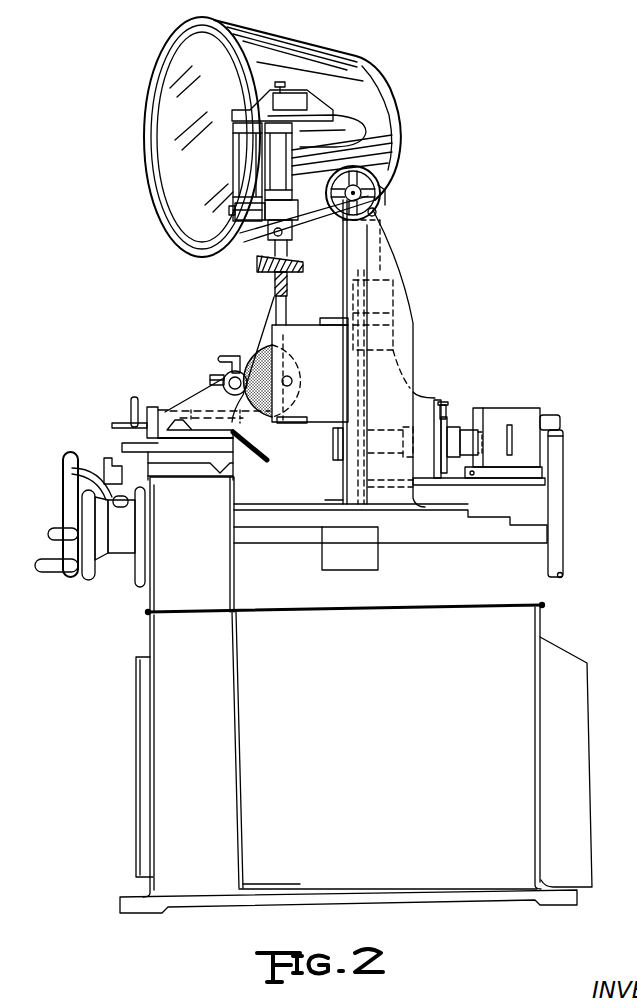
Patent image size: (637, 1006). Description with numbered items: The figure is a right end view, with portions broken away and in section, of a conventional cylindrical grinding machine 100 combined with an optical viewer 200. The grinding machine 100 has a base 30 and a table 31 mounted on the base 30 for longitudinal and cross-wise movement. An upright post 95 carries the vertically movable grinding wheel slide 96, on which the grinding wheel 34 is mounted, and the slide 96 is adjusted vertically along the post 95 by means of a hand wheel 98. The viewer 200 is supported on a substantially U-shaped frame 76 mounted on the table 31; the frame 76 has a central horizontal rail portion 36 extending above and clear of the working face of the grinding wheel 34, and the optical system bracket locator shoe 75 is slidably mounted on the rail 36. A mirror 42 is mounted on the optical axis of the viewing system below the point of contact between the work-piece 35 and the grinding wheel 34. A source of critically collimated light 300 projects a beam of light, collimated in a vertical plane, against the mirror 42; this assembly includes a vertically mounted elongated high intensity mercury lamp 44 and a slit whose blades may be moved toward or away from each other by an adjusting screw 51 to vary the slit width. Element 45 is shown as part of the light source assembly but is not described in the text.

The optical viewer 200 is at (146, 197).
The hand wheel 98 is at (381, 191).
The upright post 95 is at (394, 264).
The optical system bracket locator shoe 75 is at (294, 248).
The central horizontal rail portion 36 is at (290, 286).
The grinding wheel slide 96 is at (332, 345).
The U-shaped frame 76 is at (262, 316).
The grinding wheel 34 is at (262, 360).
The work-piece 35 is at (223, 378).
The mirror 42 is at (269, 460).
The table 31 is at (158, 447).
The base 30 is at (168, 588).
The source of critically collimated light 300 is at (479, 393).
The adjusting screw 51 is at (444, 405).
The tailstock housing 45 is at (501, 408).
The high intensity mercury lamp 44 is at (519, 432).
The cylindrical grinding machine 100 is at (142, 636).